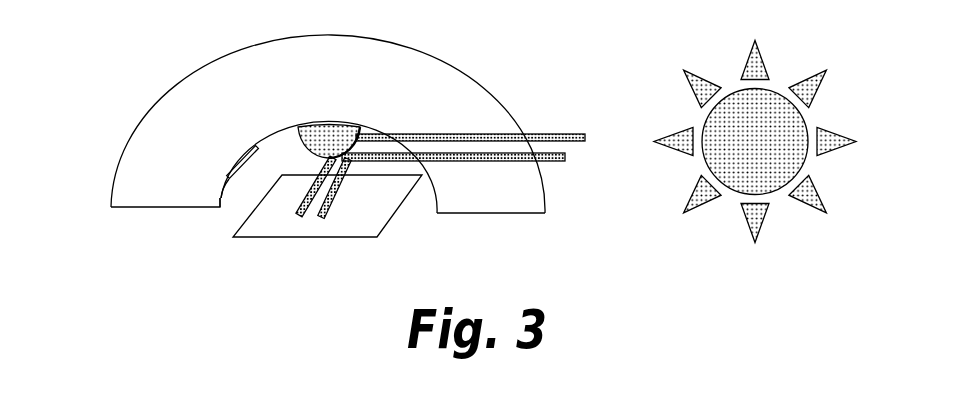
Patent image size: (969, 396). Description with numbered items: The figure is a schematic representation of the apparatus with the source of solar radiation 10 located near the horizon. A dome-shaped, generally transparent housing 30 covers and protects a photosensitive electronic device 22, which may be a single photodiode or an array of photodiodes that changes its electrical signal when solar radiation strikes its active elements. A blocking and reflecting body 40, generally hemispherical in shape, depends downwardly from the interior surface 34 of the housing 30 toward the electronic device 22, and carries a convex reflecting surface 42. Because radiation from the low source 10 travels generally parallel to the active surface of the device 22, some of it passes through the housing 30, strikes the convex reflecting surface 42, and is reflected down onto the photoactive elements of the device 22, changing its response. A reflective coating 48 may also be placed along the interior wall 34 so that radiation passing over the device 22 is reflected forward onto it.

The source of solar radiation 10 is at (806, 126).
The photosensitive electronic device 22 is at (265, 238).
The housing 30 is at (124, 152).
The interior surface 34 is at (224, 199).
The body 40 is at (283, 132).
The reflecting surface 42 is at (336, 132).
The reflective coating 48 is at (251, 180).